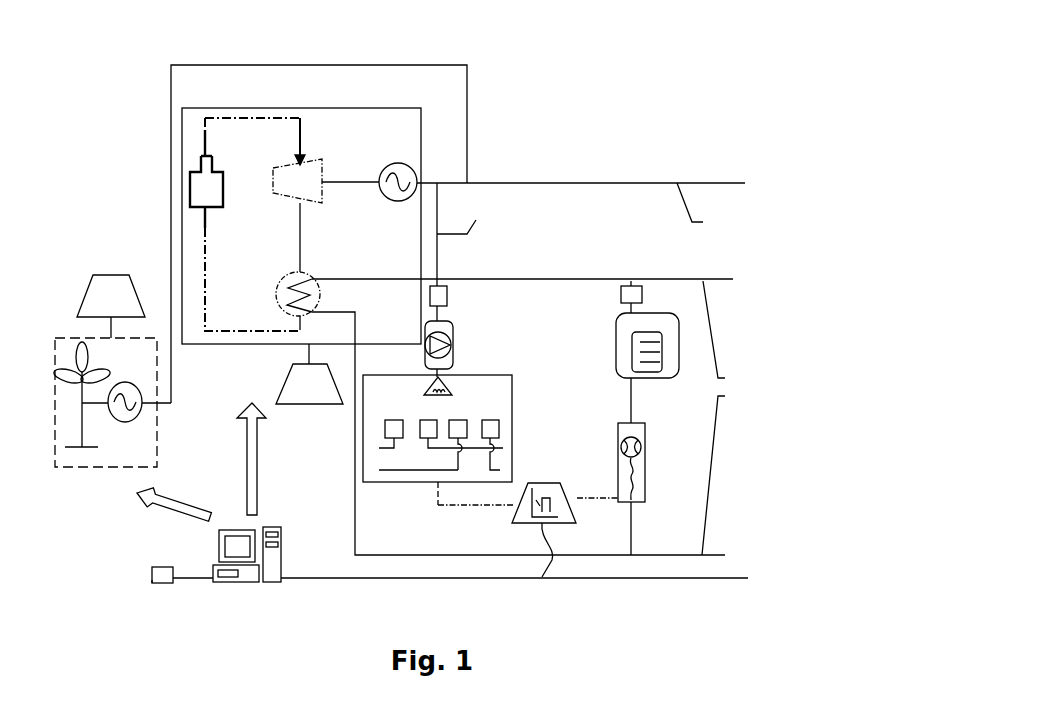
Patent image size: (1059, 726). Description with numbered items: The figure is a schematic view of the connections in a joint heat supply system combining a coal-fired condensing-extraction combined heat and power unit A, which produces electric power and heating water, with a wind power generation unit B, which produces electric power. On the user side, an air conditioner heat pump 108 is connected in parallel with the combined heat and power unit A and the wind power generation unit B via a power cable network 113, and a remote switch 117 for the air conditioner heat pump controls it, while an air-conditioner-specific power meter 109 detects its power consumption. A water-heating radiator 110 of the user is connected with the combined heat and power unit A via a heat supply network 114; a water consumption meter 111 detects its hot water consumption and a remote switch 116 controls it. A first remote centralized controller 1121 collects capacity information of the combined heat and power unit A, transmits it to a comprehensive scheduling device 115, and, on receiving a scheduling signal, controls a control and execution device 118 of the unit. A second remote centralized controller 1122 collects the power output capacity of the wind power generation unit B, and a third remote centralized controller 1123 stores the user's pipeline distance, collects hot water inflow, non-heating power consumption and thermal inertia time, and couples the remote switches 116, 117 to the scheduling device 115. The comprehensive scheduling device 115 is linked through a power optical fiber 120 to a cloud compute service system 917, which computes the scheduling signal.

The air conditioner heat pump 108 is at (453, 346).
The air-conditioner-specific power meter 109 is at (403, 481).
The water-heating radiator 110 is at (627, 358).
The water consumption meter 111 is at (638, 475).
The power cable network 113 is at (472, 578).
The heat supply network 114 is at (729, 418).
The comprehensive scheduling device 115 is at (236, 523).
The remote switch for the water-heating radiator 116 is at (620, 295).
The remote switch for the air conditioner heat pump 117 is at (448, 291).
The control and execution device 118 is at (188, 187).
The power optical fiber 120 is at (198, 574).
The cloud compute service system 917 is at (152, 580).
The first remote centralized controller 1121 is at (283, 405).
The second remote centralized controller 1122 is at (538, 495).
The third remote centralized controller 1123 is at (113, 275).
The coal-fired condensing-extraction combined heat and power unit A is at (322, 112).
The wind power generation unit B is at (87, 472).